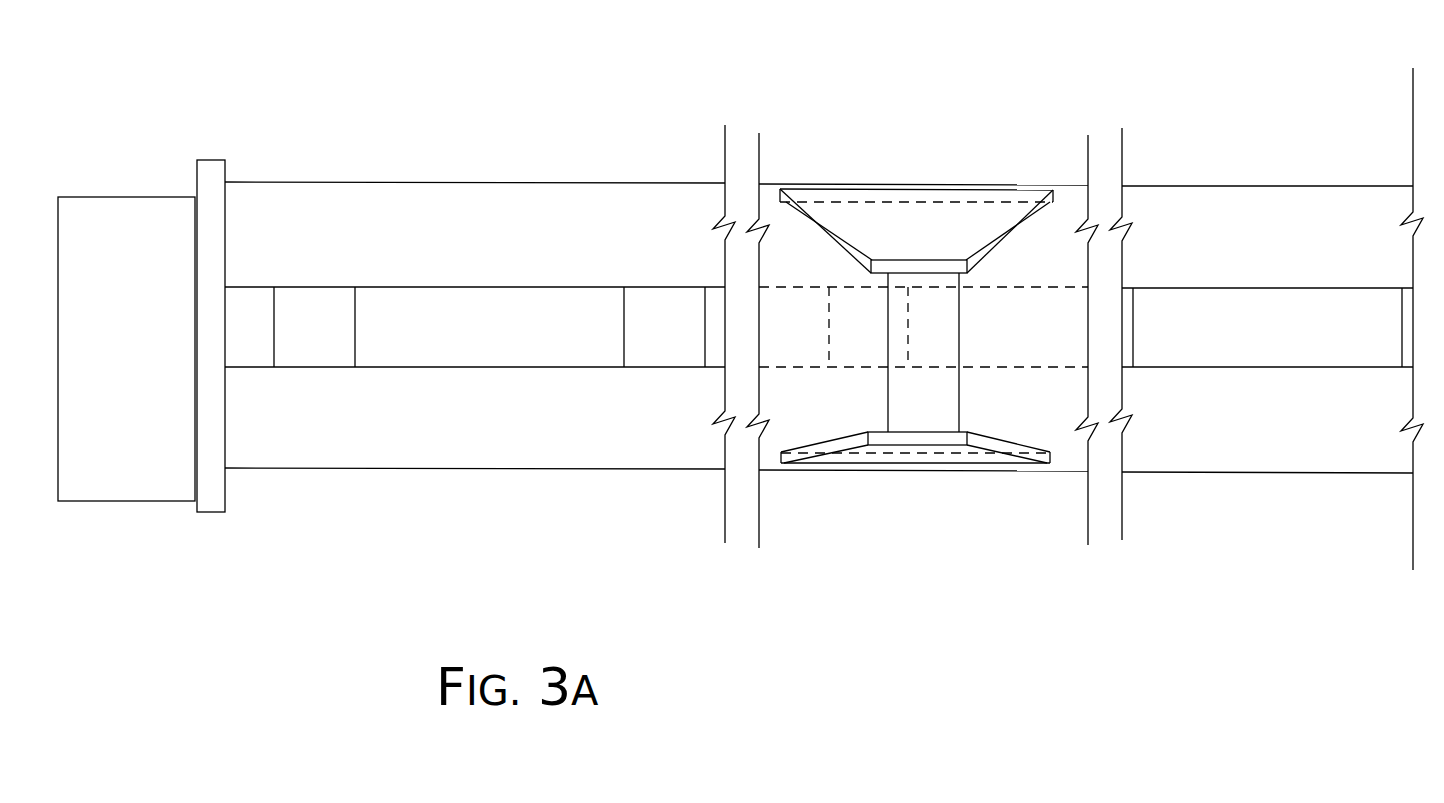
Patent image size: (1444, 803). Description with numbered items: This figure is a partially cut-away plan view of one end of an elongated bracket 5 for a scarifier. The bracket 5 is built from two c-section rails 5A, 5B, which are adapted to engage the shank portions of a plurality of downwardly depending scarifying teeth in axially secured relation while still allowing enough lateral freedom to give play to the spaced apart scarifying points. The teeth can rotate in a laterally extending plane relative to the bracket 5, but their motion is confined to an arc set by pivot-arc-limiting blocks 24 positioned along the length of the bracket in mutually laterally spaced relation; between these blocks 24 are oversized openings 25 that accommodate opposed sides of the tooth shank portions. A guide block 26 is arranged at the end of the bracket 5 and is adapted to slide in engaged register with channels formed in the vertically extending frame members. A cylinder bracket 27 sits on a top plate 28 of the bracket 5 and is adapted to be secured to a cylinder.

The elongated bracket 5 is at (757, 106).
The c-section rail 5A is at (819, 219).
The c-section rail 5B is at (819, 434).
The pivot-arc-limiting block 24 is at (265, 345).
The oversized opening 25 is at (322, 345).
The guide block 26 is at (133, 349).
The cylinder bracket 27 is at (915, 338).
The top plate 28 is at (1063, 205).